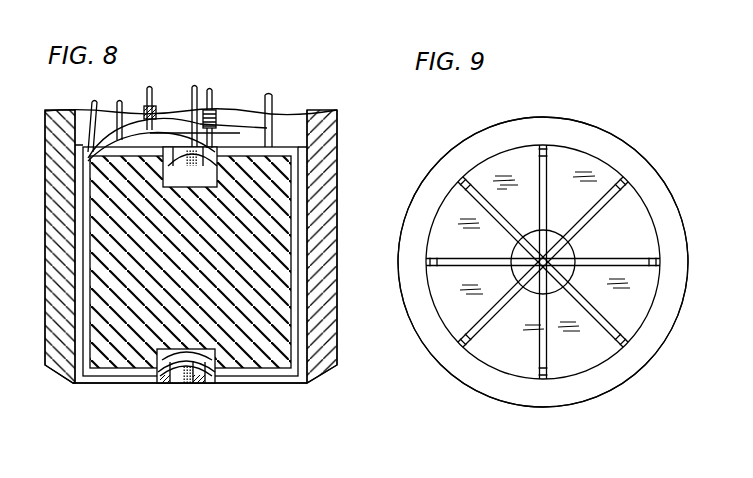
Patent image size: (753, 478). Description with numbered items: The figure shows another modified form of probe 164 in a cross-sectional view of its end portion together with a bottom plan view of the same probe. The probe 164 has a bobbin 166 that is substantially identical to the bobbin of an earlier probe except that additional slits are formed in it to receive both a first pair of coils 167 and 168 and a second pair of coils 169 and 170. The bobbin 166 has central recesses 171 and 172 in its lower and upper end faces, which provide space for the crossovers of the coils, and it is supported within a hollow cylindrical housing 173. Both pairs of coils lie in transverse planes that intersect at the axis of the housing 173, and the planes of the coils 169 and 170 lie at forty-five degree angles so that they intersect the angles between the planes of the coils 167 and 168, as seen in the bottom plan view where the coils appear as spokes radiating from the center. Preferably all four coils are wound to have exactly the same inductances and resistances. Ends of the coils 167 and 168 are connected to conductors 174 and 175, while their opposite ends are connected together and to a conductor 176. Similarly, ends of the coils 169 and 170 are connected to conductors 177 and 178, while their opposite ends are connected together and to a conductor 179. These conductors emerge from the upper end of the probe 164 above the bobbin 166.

In FIG. 8, the probe 164 is at (343, 119).
In FIG. 9, the probe 164 is at (509, 118).
In FIG. 8, the bobbin 166 is at (280, 242).
In FIG. 9, the bobbin 166 is at (637, 225).
In FIG. 8, the coil 167 is at (252, 372).
In FIG. 9, the coil 167 is at (440, 254).
In FIG. 8, the coil 168 is at (183, 403).
In FIG. 9, the coil 168 is at (547, 173).
In FIG. 8, the coil 169 is at (182, 383).
In FIG. 9, the coil 169 is at (467, 193).
In FIG. 8, the coil 170 is at (193, 384).
In FIG. 9, the coil 170 is at (608, 198).
In FIG. 8, the central recess 171 is at (160, 383).
In FIG. 9, the central recess 171 is at (568, 254).
In FIG. 8, the central recess 172 is at (200, 160).
In FIG. 8, the housing 173 is at (330, 330).
In FIG. 9, the housing 173 is at (414, 310).
In FIG. 8, the conductor 174 is at (90, 100).
In FIG. 8, the conductor 175 is at (186, 86).
In FIG. 8, the conductor 176 is at (150, 88).
In FIG. 8, the conductor 177 is at (122, 102).
In FIG. 8, the conductor 178 is at (272, 97).
In FIG. 8, the conductor 179 is at (213, 98).